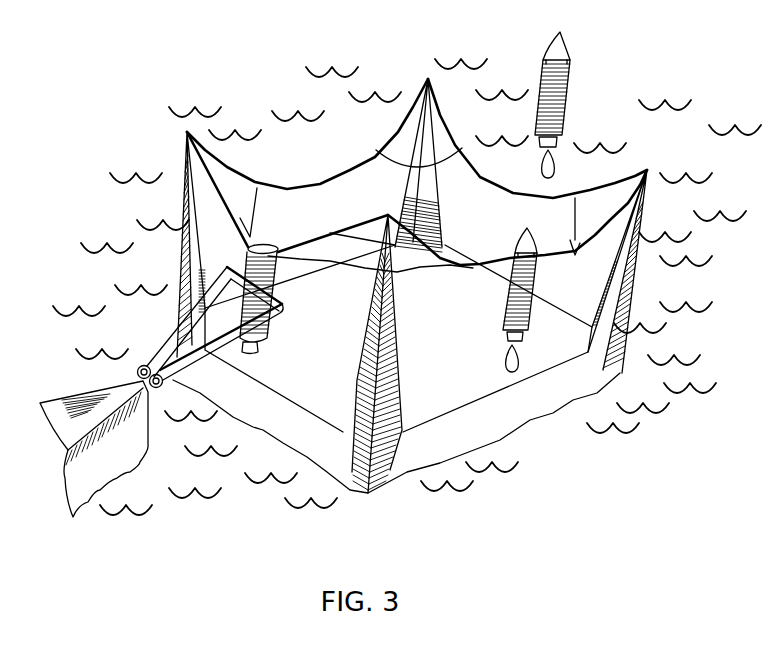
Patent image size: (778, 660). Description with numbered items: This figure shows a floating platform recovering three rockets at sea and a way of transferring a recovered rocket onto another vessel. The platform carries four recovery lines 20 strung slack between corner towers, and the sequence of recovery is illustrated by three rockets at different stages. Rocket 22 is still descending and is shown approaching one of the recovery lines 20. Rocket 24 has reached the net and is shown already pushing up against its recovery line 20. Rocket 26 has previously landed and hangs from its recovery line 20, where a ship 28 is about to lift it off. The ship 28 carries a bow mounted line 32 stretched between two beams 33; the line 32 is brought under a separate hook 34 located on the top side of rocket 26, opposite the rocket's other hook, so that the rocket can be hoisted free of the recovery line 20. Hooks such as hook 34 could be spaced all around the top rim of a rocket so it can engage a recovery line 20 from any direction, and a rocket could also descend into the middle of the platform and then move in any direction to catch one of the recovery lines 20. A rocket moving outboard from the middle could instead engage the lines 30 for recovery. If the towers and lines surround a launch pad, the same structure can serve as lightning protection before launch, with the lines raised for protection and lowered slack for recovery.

The recovery line 20 is at (298, 184).
The rocket 22 is at (567, 102).
The rocket 24 is at (536, 278).
The rocket 26 is at (254, 299).
The ship 28 is at (68, 403).
The line 30 is at (262, 204).
The bow mounted line 32 is at (283, 298).
The beam 33 is at (226, 329).
The hook 34 is at (246, 251).